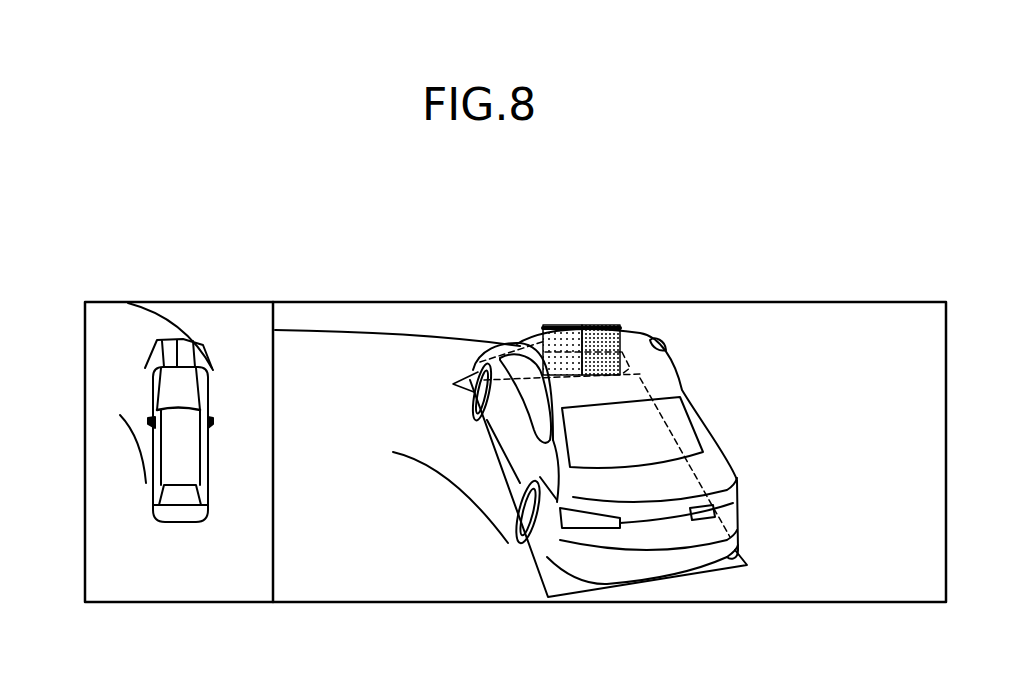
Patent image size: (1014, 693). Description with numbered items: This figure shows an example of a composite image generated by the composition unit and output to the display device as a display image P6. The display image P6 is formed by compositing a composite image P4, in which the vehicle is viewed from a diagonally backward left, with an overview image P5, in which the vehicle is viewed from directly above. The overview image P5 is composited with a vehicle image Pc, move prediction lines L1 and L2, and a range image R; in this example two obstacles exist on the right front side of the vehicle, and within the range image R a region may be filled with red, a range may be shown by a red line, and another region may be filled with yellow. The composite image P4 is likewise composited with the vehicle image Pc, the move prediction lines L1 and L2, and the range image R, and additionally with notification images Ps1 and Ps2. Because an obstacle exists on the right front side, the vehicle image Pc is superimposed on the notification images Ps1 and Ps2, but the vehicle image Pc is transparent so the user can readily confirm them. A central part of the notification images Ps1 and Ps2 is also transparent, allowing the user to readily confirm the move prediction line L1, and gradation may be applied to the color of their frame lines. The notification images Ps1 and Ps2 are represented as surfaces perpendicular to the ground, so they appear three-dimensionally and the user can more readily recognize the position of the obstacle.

The display image P6 is at (822, 250).
The overview image P5 is at (216, 302).
The composite image P4 is at (888, 302).
The move prediction line L1 is at (183, 328).
The move prediction line L2 is at (136, 438).
The range image R is at (148, 369).
The vehicle image Pc is at (153, 498).
The notification image Ps1 is at (603, 326).
The notification image Ps2 is at (562, 326).